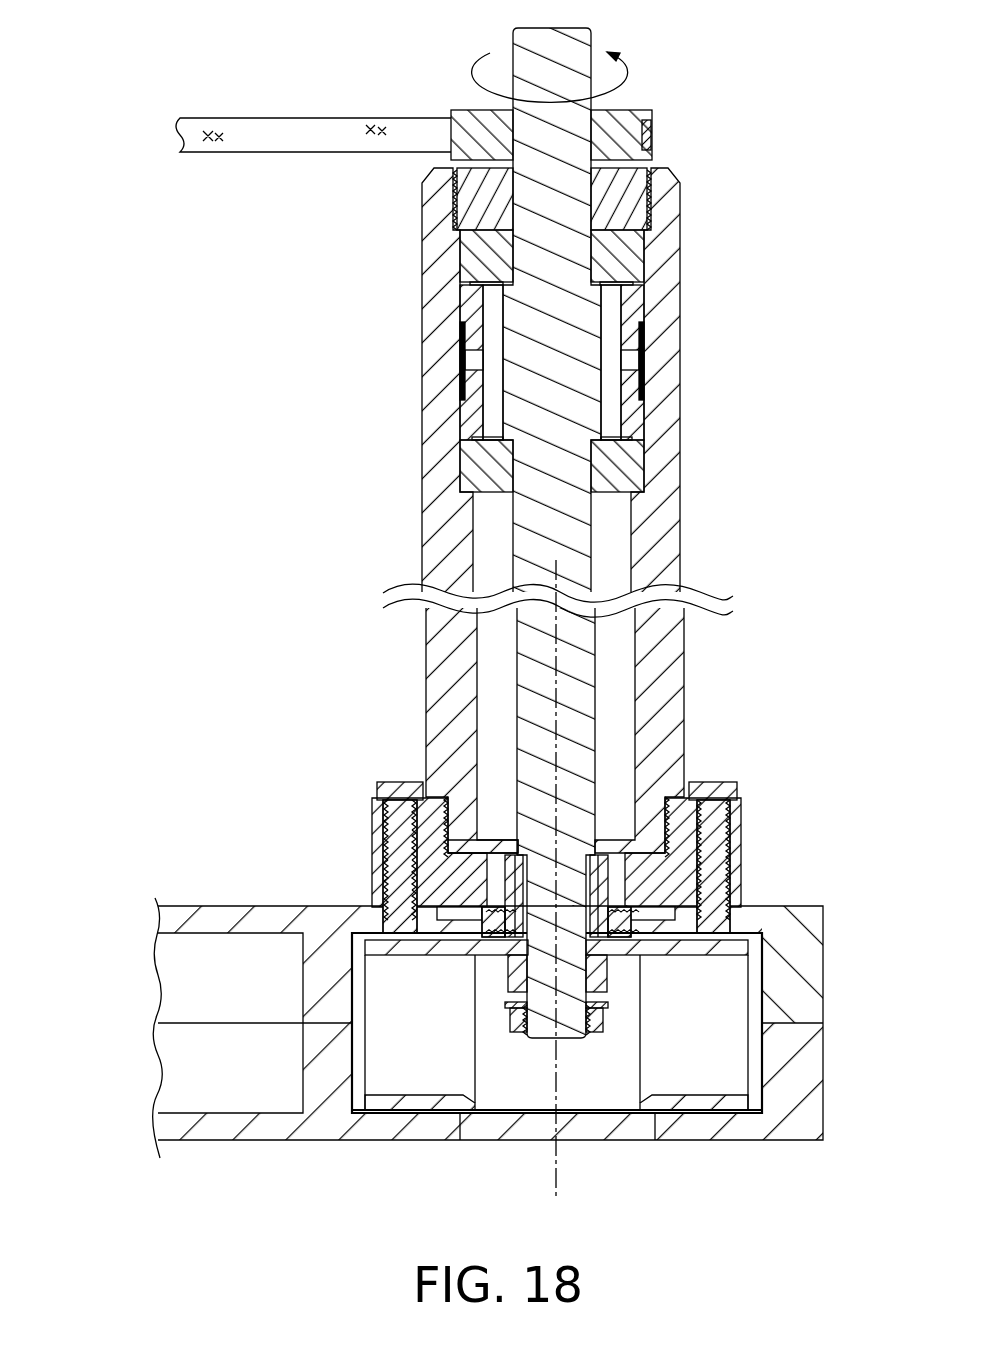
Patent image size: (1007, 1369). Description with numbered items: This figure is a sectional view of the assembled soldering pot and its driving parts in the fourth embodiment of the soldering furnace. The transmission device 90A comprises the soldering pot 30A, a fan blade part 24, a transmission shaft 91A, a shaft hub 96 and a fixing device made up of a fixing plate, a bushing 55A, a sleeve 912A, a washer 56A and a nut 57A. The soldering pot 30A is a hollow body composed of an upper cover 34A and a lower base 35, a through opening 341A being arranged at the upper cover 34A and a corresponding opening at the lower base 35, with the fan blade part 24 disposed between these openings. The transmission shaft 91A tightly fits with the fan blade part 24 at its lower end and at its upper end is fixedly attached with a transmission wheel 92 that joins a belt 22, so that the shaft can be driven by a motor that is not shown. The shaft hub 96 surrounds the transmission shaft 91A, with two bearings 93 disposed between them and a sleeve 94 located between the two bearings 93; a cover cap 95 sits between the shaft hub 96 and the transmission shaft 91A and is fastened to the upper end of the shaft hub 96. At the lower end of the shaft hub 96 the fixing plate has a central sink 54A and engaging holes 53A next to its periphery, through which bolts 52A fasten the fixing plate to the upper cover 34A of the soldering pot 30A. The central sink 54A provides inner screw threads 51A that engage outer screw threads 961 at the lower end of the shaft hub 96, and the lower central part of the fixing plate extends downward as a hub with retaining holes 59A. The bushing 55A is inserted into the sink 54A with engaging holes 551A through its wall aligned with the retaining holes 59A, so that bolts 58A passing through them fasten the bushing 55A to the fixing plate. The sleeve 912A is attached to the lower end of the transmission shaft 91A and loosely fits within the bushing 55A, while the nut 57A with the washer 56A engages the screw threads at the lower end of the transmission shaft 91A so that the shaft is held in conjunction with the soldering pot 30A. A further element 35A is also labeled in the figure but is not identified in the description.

The belt 22 is at (305, 132).
The fan blade part 24 is at (743, 1073).
The soldering pot 30A is at (100, 943).
The upper cover 34A is at (162, 920).
The lower base 35 is at (162, 1130).
The threaded shaft end 35A is at (527, 1040).
The inner screw threads 51A is at (735, 840).
The bolts 52A is at (390, 782).
The engaging holes 53A is at (383, 812).
The central sink 54A is at (600, 850).
The bushing 55A is at (632, 895).
The washer 56A is at (503, 1006).
The nut 57A is at (597, 1033).
The bolts 58A is at (433, 943).
The retaining holes 59A is at (737, 900).
The transmission device 90A is at (745, 349).
The transmission shaft 91A is at (462, 641).
The transmission wheel 92 is at (470, 113).
The bearings 93 is at (470, 259).
The sleeve 94 is at (470, 311).
The cover cap 95 is at (470, 196).
The shaft hub 96 is at (445, 529).
The through opening 341A is at (372, 906).
The engaging holes 551A is at (605, 957).
The sleeve 912A is at (505, 882).
The outer screw threads 961 is at (655, 838).